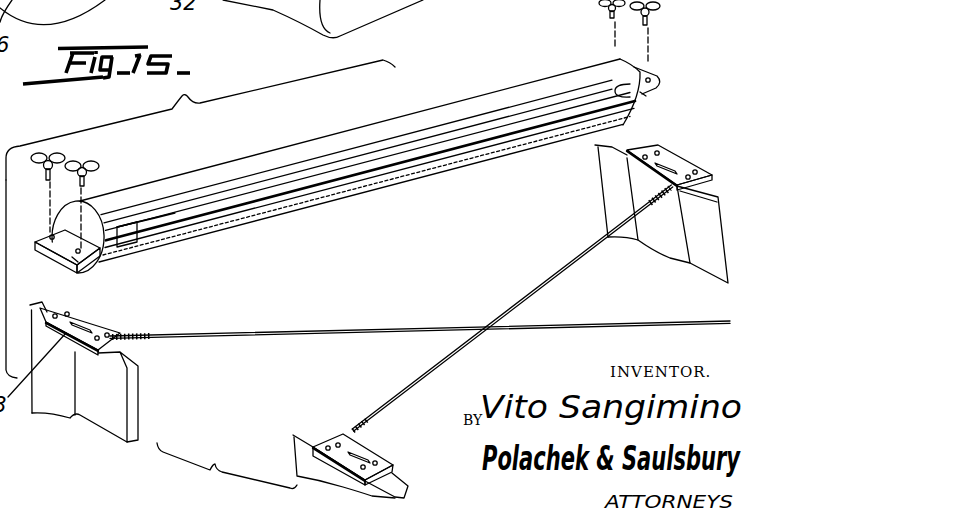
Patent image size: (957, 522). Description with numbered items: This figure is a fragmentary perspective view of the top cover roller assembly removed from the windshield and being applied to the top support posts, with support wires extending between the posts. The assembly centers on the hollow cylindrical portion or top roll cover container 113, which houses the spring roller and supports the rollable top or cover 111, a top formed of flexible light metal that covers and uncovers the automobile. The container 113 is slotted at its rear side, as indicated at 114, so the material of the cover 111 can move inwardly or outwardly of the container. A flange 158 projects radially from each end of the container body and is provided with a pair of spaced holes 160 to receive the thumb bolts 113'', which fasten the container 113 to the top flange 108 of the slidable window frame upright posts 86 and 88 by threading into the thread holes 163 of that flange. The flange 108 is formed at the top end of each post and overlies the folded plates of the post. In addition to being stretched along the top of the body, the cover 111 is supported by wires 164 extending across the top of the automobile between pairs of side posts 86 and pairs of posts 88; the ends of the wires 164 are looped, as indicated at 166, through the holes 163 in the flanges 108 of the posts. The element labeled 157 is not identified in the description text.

The slidable window frame upright post 86 is at (144, 380).
The slidable window frame upright post 88 is at (594, 178).
The flange 108 is at (683, 164).
The top or cover 111 is at (204, 210).
The hollow cylindrical portion (top roll cover container) 113 is at (346, 155).
The thumb bolts 113'' is at (345, 124).
The slot 114 is at (347, 163).
The rail 157 is at (430, 127).
The flange 158 is at (58, 254).
The spaced holes 160 is at (49, 232).
The thread holes 163 is at (68, 309).
The wires 164 is at (352, 330).
The looped ends 166 is at (134, 332).